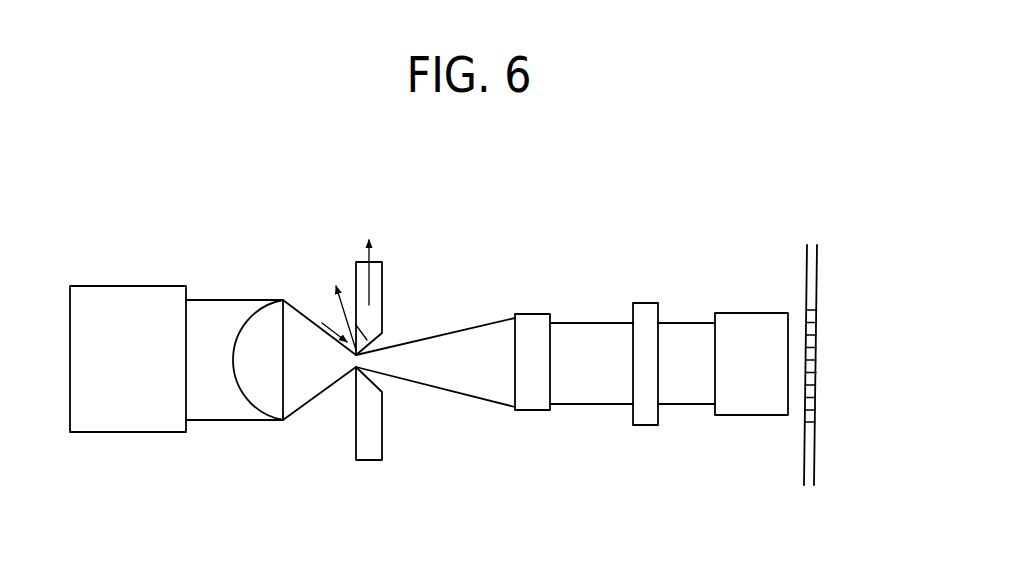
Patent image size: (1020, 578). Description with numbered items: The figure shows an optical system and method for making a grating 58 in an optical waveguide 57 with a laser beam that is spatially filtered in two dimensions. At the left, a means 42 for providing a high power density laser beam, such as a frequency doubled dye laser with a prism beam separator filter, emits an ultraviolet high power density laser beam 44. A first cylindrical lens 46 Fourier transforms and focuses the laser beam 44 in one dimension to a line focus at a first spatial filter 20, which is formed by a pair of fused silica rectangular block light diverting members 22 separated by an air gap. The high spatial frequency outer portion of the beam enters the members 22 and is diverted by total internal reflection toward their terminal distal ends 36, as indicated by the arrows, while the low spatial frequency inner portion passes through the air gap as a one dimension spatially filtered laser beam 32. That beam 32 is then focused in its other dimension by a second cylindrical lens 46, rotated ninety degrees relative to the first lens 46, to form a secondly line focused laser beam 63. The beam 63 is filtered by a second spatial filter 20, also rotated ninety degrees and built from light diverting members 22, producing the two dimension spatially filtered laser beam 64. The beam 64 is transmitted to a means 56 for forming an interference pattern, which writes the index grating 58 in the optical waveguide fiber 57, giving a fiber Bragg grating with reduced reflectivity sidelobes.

The spatial filter 20 is at (308, 267).
The light diverting member 22 is at (345, 407).
The one dimension spatially filtered laser beam 32 is at (430, 407).
The terminal distal end 36 is at (372, 462).
The means for providing a high power density laser beam 42 is at (113, 376).
The high power density laser beam 44 is at (212, 431).
The cylindrical lens 46 is at (250, 404).
The means for forming an interference pattern 56 is at (740, 375).
The optical waveguide fiber 57 is at (824, 273).
The grating 58 is at (826, 335).
The secondly line focused laser beam 63 is at (585, 318).
The two dimension spatially filtered laser beam 64 is at (693, 313).